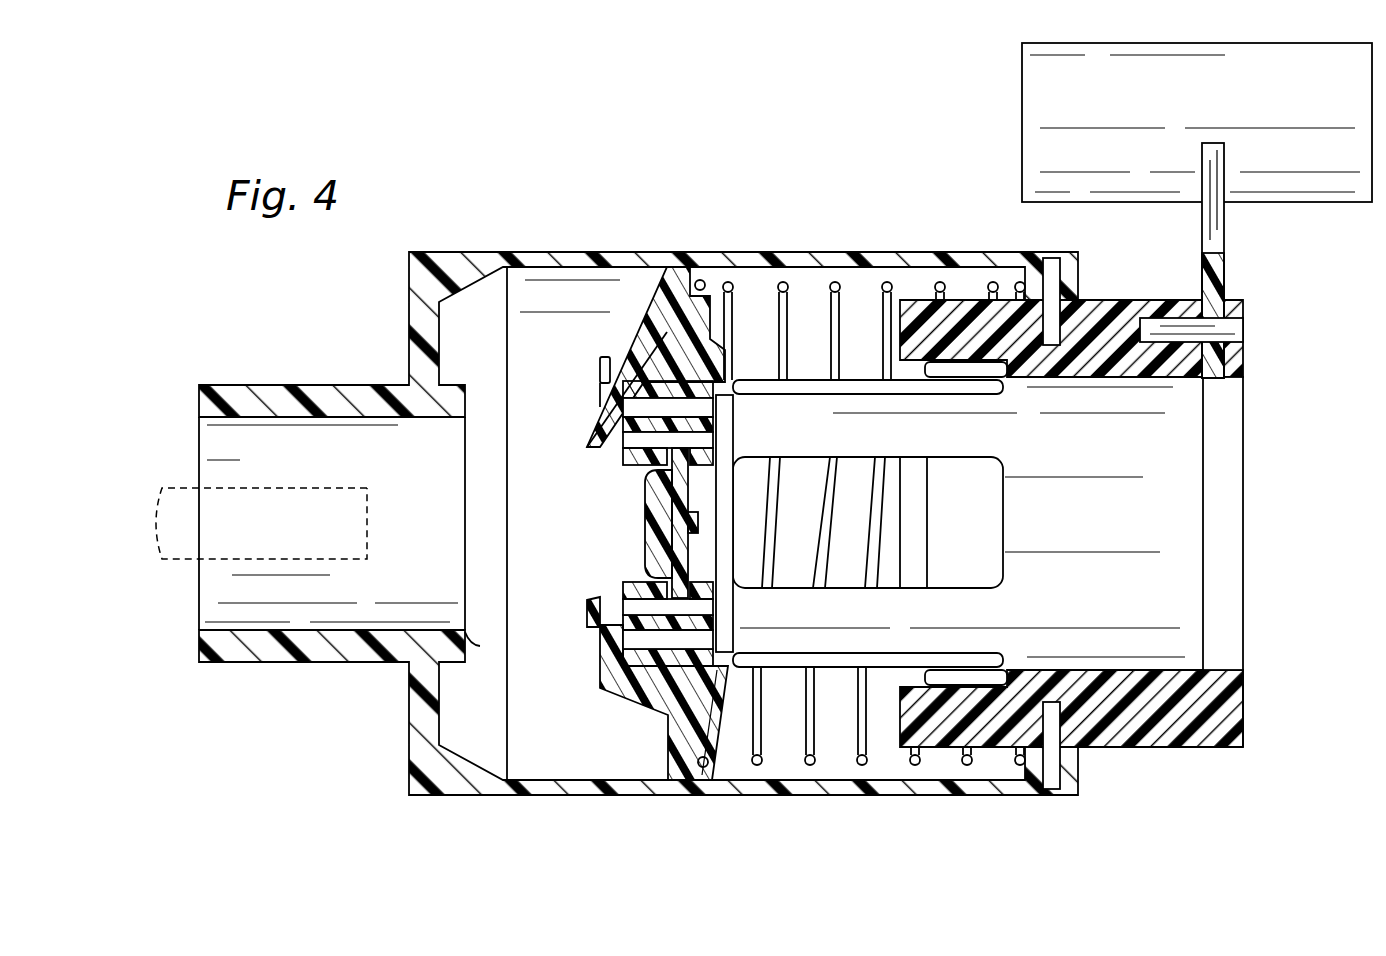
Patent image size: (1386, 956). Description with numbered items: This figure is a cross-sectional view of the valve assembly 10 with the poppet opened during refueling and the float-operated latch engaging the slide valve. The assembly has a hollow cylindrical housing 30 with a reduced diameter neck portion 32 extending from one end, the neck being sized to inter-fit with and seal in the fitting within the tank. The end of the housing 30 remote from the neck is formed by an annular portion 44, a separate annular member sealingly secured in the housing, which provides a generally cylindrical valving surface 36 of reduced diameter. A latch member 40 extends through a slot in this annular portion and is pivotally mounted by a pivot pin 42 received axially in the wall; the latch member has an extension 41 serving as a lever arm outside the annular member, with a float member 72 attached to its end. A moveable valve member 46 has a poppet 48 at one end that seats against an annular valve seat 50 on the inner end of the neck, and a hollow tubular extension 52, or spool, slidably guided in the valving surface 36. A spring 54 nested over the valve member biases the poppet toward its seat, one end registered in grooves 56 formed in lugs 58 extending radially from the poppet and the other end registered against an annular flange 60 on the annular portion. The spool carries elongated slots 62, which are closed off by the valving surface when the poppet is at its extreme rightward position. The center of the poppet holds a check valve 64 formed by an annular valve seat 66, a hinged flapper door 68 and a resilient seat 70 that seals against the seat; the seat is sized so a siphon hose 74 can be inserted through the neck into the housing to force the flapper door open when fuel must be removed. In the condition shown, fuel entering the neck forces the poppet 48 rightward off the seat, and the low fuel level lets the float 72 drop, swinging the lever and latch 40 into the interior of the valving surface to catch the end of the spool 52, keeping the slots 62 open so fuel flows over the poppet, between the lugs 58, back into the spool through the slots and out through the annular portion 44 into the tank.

The valve assembly 10 is at (511, 165).
The housing 30 is at (755, 797).
The neck portion 32 is at (322, 663).
The valving surface 36 is at (1233, 672).
The latch member 40 is at (1247, 377).
The extension 41 is at (1227, 223).
The pivot pin 42 is at (1243, 330).
The annular portion 44 is at (1173, 743).
The moveable valve member 46 is at (806, 355).
The poppet 48 is at (587, 447).
The annular valve seat 50 is at (600, 352).
The hollow tubular extension 52 is at (1213, 573).
The spring 54 is at (902, 280).
The grooves 56 is at (703, 280).
The lugs 58 is at (667, 278).
The annular flange 60 is at (1013, 775).
The slots 62 is at (853, 287).
The check valve 64 is at (594, 494).
The annular valve seat 66 is at (683, 592).
The flapper door 68 is at (713, 480).
The resilient seat 70 is at (647, 538).
The float member 72 is at (1020, 118).
The siphon hose 74 is at (278, 488).